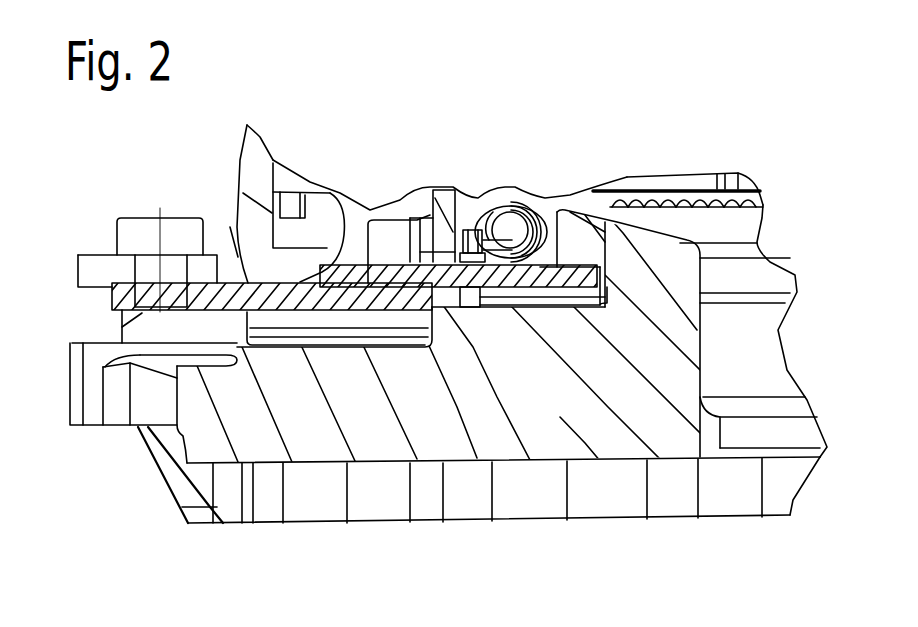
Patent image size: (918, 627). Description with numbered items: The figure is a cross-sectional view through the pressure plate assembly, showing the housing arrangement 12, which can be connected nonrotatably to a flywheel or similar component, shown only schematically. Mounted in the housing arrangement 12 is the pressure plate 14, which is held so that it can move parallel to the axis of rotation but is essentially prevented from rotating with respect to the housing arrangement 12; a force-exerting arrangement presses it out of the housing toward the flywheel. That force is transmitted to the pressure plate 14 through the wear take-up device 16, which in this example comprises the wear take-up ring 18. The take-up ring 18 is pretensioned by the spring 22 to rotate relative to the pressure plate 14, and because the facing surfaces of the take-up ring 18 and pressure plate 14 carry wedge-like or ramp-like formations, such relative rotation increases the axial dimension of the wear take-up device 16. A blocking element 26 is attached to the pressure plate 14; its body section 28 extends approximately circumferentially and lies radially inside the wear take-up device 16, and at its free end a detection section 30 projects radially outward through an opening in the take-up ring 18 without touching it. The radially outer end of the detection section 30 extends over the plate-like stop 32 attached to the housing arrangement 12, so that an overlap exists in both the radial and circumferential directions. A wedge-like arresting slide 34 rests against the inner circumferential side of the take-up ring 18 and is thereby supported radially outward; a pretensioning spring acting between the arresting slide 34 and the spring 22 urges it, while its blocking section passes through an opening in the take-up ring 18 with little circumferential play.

The housing arrangement 12 is at (252, 140).
The pressure plate 14 is at (433, 443).
The wear take-up device 16 is at (508, 186).
The wear take-up ring 18 is at (450, 205).
The spring 22 is at (758, 198).
The blocking element 26 is at (577, 310).
The body section 28 is at (553, 268).
The detection section 30 is at (413, 277).
The plate-like stop 32 is at (247, 297).
The arresting slide 34 is at (487, 270).